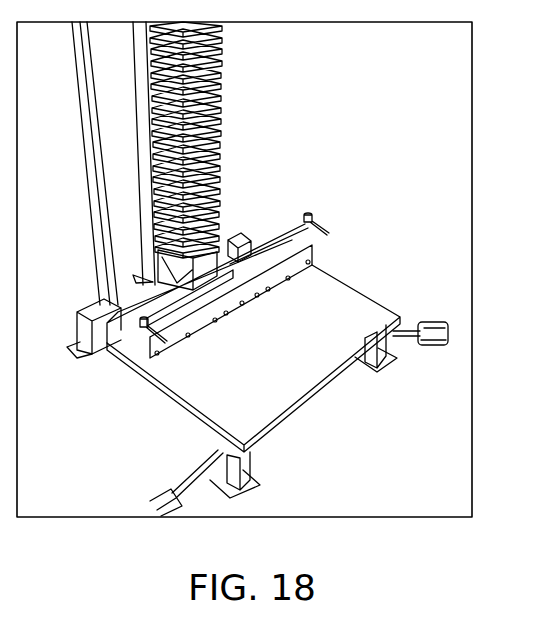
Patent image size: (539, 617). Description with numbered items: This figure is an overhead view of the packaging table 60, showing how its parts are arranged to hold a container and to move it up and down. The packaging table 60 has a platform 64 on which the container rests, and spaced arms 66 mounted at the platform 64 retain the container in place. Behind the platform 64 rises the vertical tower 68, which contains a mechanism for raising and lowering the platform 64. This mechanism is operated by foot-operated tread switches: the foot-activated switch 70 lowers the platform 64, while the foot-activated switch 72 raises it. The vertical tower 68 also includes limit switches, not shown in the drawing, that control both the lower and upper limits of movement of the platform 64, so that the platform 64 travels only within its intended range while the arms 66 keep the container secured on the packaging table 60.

The packaging table 60 is at (427, 266).
The platform 64 is at (330, 351).
The arms 66 is at (320, 226).
The vertical tower 68 is at (220, 163).
The foot-activated switch 70 is at (173, 488).
The foot-activated switch 72 is at (437, 347).